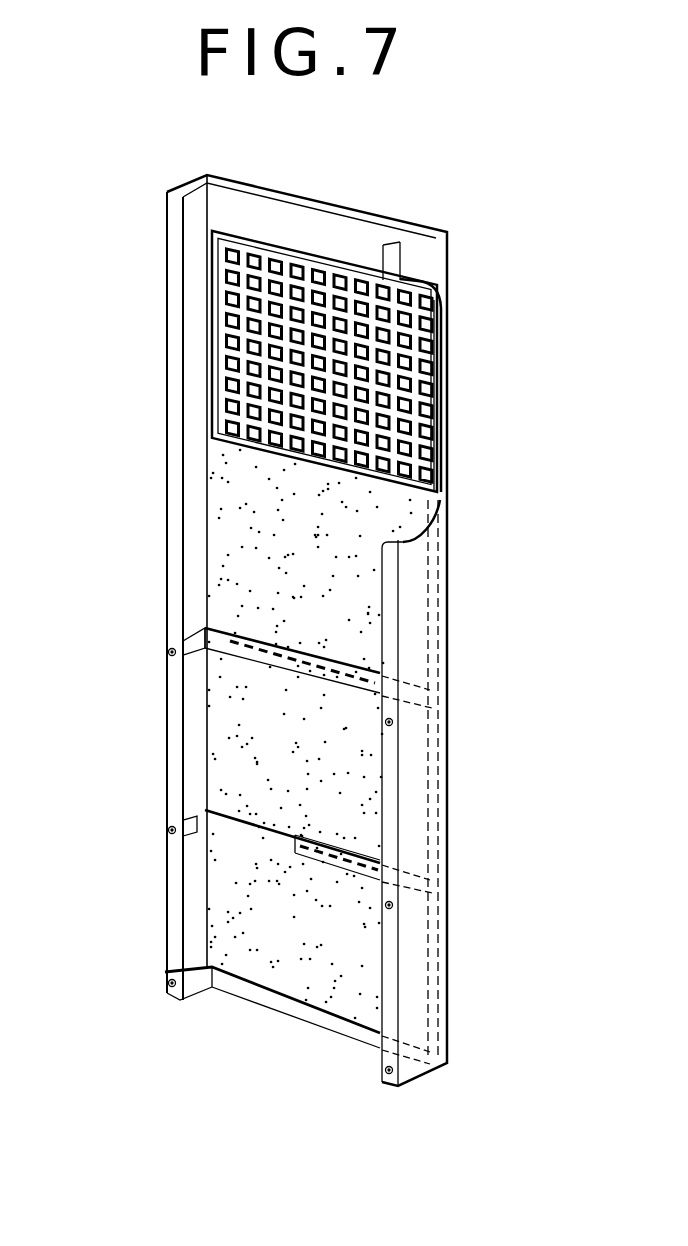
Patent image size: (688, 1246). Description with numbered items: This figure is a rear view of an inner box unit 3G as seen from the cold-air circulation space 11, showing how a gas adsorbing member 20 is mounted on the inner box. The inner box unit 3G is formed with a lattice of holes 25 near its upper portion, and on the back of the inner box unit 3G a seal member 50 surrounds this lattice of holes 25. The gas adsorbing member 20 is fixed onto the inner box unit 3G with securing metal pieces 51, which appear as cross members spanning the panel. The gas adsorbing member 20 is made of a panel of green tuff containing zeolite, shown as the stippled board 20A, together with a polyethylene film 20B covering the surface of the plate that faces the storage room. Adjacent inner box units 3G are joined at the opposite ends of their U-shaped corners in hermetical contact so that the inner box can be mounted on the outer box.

The cold-air circulation space 11 is at (290, 897).
The inner box unit 3G is at (397, 220).
The gas adsorbing member 20 is at (73, 452).
The heat insulating board 20A is at (245, 497).
The polyethylene film 20B is at (218, 443).
The lattice of holes 25 is at (420, 326).
The seal member 50 is at (283, 237).
The securing metal piece 51 is at (198, 650).